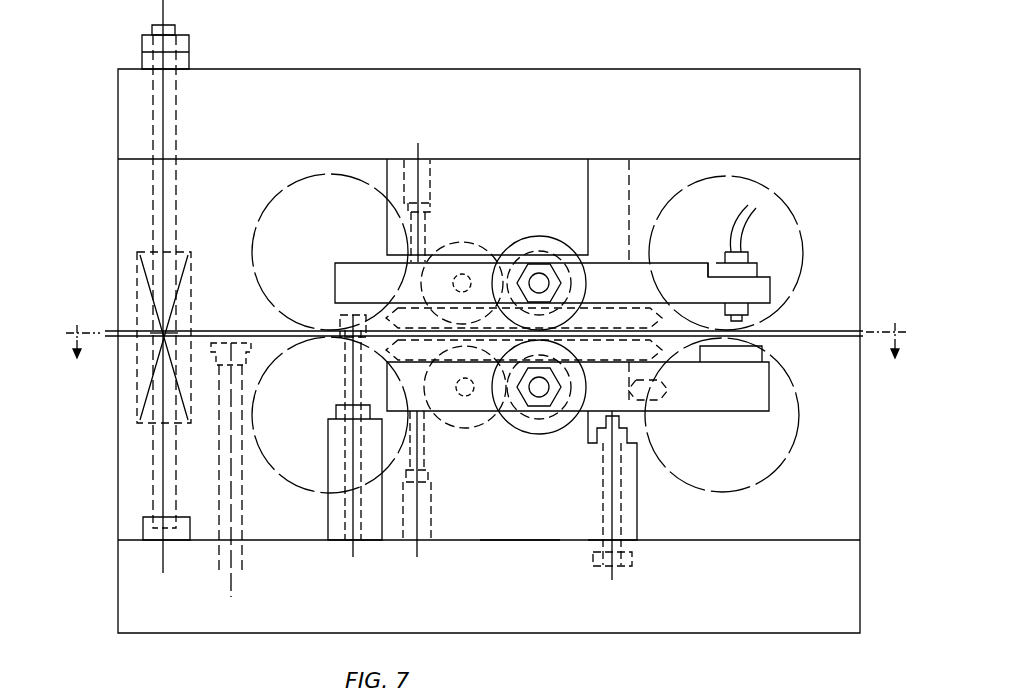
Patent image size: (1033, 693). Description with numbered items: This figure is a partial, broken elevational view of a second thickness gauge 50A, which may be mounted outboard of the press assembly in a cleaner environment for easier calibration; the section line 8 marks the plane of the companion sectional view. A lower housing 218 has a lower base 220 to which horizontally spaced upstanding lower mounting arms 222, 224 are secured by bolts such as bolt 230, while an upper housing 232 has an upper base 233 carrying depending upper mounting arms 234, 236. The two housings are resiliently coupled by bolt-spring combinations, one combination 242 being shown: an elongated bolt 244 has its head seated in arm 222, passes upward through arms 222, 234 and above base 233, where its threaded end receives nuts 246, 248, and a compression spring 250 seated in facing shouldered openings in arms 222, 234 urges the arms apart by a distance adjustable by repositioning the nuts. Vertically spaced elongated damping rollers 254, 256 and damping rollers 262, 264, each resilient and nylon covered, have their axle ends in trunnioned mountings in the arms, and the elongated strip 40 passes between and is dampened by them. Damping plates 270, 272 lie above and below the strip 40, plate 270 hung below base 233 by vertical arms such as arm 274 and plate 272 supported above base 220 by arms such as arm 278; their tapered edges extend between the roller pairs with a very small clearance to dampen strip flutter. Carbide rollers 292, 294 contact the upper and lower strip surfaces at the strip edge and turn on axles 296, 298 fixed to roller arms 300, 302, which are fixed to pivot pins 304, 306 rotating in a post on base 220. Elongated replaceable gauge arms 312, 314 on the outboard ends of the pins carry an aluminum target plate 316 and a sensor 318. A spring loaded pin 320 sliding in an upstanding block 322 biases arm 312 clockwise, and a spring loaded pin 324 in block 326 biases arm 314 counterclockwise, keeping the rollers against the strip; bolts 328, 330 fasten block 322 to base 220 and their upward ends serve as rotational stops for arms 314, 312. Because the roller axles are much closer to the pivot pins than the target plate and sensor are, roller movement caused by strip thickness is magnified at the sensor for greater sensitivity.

The section line 8- 8 is at (486, 354).
The elongated strip 40 is at (813, 338).
The thickness gauge 50A is at (208, 636).
The lower housing 218 is at (116, 541).
The lower base 220 is at (419, 620).
The lower mounting arm 222 is at (296, 519).
The lower mounting arm 224 is at (841, 504).
The bolt 230 is at (222, 503).
The upper housing 232 is at (116, 236).
The upper base 233 is at (384, 121).
The upper mounting arm 234 is at (241, 204).
The upper mounting arm 236 is at (861, 204).
The bolt-spring combination 242 is at (190, 314).
The elongated bolt 244 is at (155, 465).
The nut 246 is at (190, 62).
The nut 248 is at (188, 33).
The compression spring 250 is at (176, 292).
The damping roller 254 is at (318, 507).
The damping roller 256 is at (285, 195).
The damping roller 262 is at (700, 497).
The damping roller 264 is at (765, 182).
The damping plate 270 is at (376, 262).
The damping plate 272 is at (338, 268).
The vertical arm 274 is at (642, 196).
The vertical arm 278 is at (656, 392).
The carbide roller 292 is at (492, 420).
The carbide roller 294 is at (497, 255).
The axle 296 is at (452, 420).
The axle 298 is at (448, 262).
The roller arm 300 is at (445, 402).
The roller arm 302 is at (442, 268).
The pivot pin 304 is at (540, 402).
The pivot pin 306 is at (546, 270).
The gauge arm 312 is at (731, 410).
The gauge arm 314 is at (686, 262).
The target plate 316 is at (762, 347).
The sensor 318 is at (752, 317).
The spring loaded pin 320 is at (429, 506).
The block 322 is at (516, 520).
The spring loaded pin 324 is at (425, 222).
The block 326 is at (602, 178).
The bolt 328 is at (347, 497).
The bolt 330 is at (605, 525).